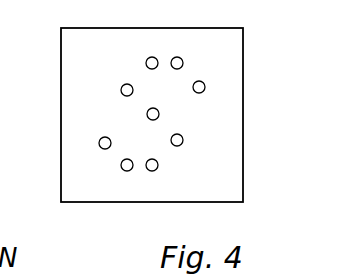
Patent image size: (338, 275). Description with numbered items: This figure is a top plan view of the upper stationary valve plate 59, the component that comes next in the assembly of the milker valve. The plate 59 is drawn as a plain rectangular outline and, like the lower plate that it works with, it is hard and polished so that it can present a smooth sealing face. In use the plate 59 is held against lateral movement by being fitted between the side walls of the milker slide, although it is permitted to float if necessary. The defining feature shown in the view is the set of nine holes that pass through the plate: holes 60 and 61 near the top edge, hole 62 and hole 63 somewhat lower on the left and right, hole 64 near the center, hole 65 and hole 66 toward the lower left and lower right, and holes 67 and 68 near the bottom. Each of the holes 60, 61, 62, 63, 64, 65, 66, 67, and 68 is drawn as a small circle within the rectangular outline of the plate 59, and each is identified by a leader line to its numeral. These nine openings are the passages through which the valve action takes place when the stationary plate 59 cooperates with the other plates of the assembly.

The upper stationary valve plate 59 is at (117, 33).
The hole 60 is at (153, 57).
The hole 61 is at (179, 58).
The hole 62 is at (121, 87).
The hole 63 is at (205, 86).
The hole 64 is at (159, 114).
The hole 65 is at (99, 141).
The hole 66 is at (183, 140).
The hole 67 is at (121, 165).
The hole 68 is at (157, 171).